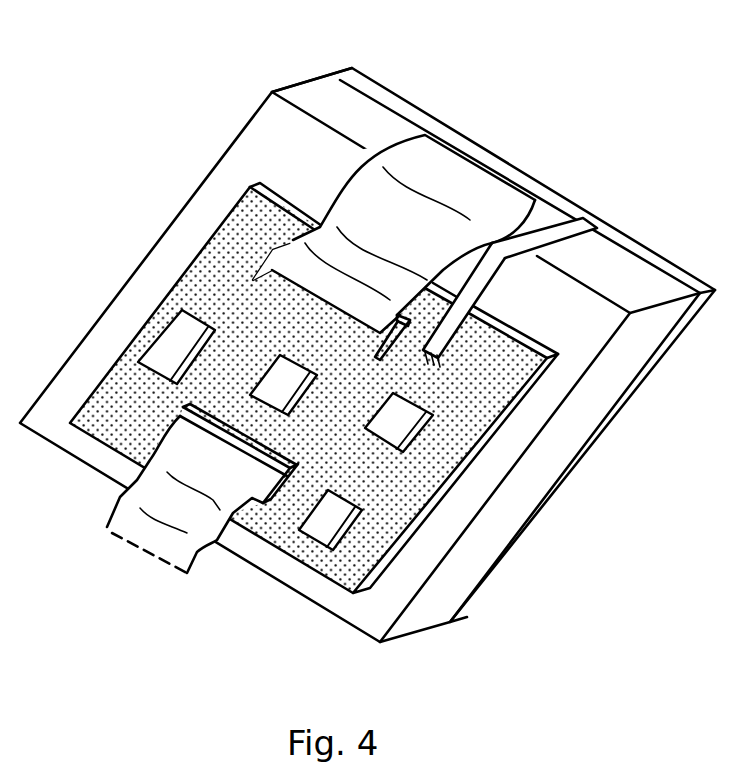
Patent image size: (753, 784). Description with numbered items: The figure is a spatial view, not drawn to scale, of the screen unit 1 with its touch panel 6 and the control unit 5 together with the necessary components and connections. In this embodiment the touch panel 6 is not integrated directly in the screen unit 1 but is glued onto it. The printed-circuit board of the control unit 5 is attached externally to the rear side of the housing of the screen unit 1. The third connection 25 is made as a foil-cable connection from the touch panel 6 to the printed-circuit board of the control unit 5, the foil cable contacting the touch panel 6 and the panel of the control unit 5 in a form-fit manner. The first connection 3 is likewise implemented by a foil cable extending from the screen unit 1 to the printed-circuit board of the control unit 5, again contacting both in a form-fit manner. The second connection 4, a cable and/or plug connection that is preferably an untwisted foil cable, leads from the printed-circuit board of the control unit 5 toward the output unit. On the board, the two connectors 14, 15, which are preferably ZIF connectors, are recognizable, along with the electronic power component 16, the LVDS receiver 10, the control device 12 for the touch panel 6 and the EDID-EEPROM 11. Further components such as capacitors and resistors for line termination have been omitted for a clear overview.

The screen unit 1 is at (323, 98).
The first connection 3 is at (375, 203).
The second connection 4 is at (133, 493).
The control unit 5 is at (190, 293).
The touch panel 6 is at (370, 80).
The LVDS receiver 10 is at (270, 390).
The EDID-EEPROM 11 is at (313, 523).
The control device 12 is at (383, 427).
The connector 14 is at (181, 413).
The connector 15 is at (277, 290).
The electronic power component 16 is at (170, 342).
The third connection 25 is at (493, 290).